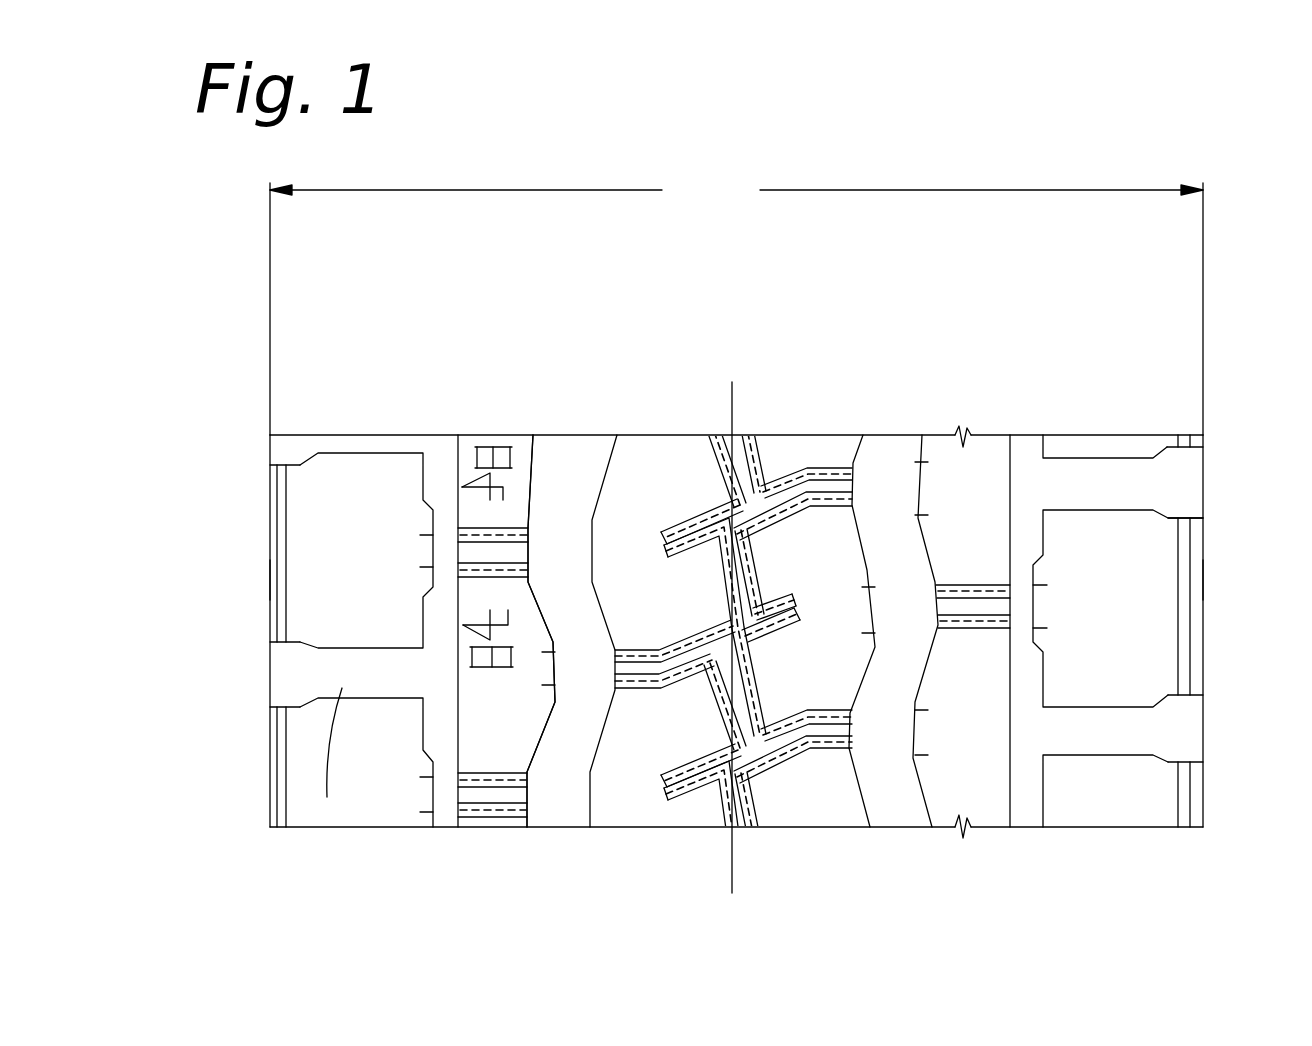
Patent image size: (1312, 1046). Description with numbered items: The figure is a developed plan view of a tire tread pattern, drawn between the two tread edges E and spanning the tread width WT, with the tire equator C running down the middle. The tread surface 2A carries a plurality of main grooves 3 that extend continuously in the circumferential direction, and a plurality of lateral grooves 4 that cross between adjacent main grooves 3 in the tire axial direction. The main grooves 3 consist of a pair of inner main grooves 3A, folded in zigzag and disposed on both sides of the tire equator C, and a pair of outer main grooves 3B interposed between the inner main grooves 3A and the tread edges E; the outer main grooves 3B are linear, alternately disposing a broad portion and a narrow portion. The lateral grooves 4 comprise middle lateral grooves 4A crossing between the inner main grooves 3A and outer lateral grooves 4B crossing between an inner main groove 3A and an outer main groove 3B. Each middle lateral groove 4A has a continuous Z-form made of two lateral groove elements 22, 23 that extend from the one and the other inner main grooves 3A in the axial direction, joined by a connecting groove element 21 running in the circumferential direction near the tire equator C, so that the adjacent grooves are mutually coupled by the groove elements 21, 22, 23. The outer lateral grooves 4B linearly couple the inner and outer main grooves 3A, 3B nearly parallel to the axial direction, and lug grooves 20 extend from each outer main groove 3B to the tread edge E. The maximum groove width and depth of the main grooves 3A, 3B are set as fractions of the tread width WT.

The tread width WT is at (736, 306).
The lug groove 20 is at (300, 823).
The tread surface 2A is at (353, 798).
The main groove 3 is at (538, 805).
The inner main groove 3A is at (570, 797).
The outer main groove 3B is at (443, 805).
The lateral groove 4 is at (737, 572).
The middle lateral groove 4A is at (756, 602).
The outer lateral groove 4B is at (512, 552).
The connecting groove element 21 is at (770, 467).
The lateral groove element 22 is at (853, 463).
The lateral groove element 23 is at (780, 590).
The tire equator C is at (712, 866).
The tread edge E is at (268, 582).